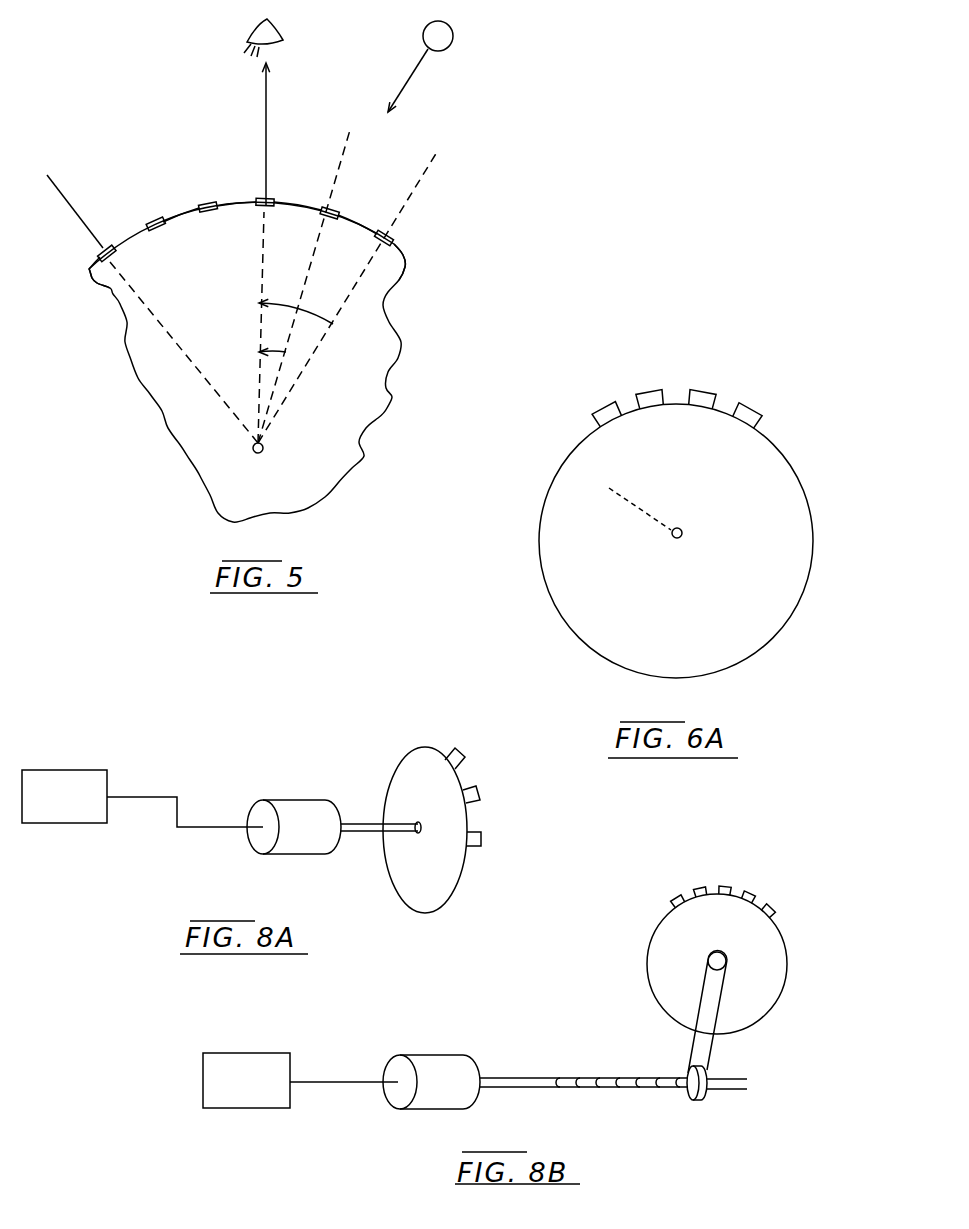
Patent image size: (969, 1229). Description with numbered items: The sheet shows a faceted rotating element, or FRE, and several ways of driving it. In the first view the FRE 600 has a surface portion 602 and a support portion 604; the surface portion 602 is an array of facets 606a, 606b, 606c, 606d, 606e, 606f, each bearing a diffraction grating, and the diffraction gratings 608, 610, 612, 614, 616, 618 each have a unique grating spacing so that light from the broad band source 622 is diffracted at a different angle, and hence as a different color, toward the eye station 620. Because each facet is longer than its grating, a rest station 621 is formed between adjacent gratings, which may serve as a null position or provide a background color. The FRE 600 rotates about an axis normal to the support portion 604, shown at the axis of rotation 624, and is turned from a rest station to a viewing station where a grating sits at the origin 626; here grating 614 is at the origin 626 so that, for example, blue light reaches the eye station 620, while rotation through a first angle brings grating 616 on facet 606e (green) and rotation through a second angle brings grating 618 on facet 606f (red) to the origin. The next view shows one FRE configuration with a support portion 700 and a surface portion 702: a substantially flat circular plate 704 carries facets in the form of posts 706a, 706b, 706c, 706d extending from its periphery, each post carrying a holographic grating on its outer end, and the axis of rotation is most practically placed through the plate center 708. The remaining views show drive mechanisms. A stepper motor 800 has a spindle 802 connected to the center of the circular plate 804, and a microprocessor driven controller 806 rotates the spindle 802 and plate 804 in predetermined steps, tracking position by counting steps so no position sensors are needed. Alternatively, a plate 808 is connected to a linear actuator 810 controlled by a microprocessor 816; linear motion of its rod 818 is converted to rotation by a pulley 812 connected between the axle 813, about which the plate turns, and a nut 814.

In FIG. 5, the faceted rotating element 600 is at (284, 326).
In FIG. 5, the surface portion 602 is at (397, 254).
In FIG. 5, the support portion 604 is at (393, 396).
In FIG. 5, the facet 606a is at (112, 292).
In FIG. 5, the facet 606b is at (180, 255).
In FIG. 5, the facet 606c is at (213, 212).
In FIG. 5, the facet 606d is at (264, 212).
In FIG. 5, the facet 606e is at (378, 248).
In FIG. 5, the facet 606f is at (406, 270).
In FIG. 5, the diffraction grating 608 is at (98, 255).
In FIG. 5, the diffraction grating 610 is at (155, 217).
In FIG. 5, the diffraction grating 612 is at (209, 200).
In FIG. 5, the diffraction grating 614 is at (267, 199).
In FIG. 5, the diffraction grating 616 is at (332, 208).
In FIG. 5, the diffraction grating 618 is at (390, 236).
In FIG. 5, the eye station 620 is at (238, 28).
In FIG. 5, the rest station 621 is at (313, 206).
In FIG. 5, the broad band source 622 is at (452, 34).
In FIG. 5, the axis of rotation 624 is at (230, 414).
In FIG. 5, the origin 626 is at (254, 162).
In FIG. 6A, the support portion 700 is at (645, 481).
In FIG. 6A, the surface portion 702 is at (677, 356).
In FIG. 6A, the circular plate 704 is at (560, 477).
In FIG. 6A, the post 706a is at (603, 407).
In FIG. 6A, the post 706b is at (650, 386).
In FIG. 6A, the post 706c is at (698, 388).
In FIG. 6A, the post 706d is at (750, 406).
In FIG. 6A, the plate center 708 is at (661, 524).
In FIG. 8A, the stepper motor 800 is at (251, 804).
In FIG. 8A, the spindle 802 is at (374, 823).
In FIG. 8A, the circular plate 804 is at (422, 750).
In FIG. 8A, the microprocessor driven controller 806 is at (60, 770).
In FIG. 8B, the plate 808 is at (653, 938).
In FIG. 8B, the linear actuator 810 is at (448, 1042).
In FIG. 8B, the pulley 812 is at (713, 1046).
In FIG. 8B, the axle 813 is at (726, 955).
In FIG. 8B, the nut 814 is at (694, 1102).
In FIG. 8B, the microprocessor 816 is at (258, 1053).
In FIG. 8B, the rod 818 is at (588, 1077).